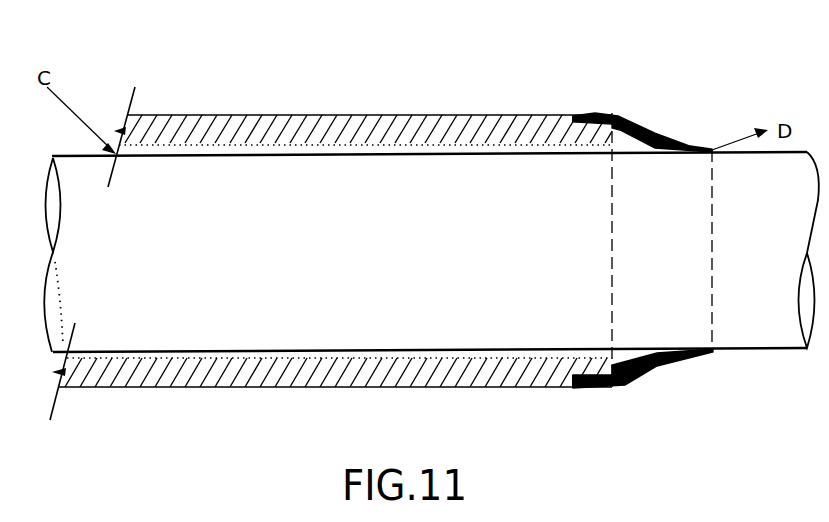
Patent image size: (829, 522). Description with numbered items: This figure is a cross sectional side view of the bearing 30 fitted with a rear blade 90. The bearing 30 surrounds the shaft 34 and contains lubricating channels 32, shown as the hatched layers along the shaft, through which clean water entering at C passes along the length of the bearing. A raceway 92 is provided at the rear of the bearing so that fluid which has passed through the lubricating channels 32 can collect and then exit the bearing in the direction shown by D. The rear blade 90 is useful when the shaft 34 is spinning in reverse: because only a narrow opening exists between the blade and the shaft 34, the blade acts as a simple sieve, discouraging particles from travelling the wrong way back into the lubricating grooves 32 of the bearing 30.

The bearing 30 is at (192, 115).
The lubricating channels 32 is at (345, 152).
The shaft 34 is at (265, 257).
The rear blade 90 is at (647, 128).
The raceway 92 is at (578, 117).